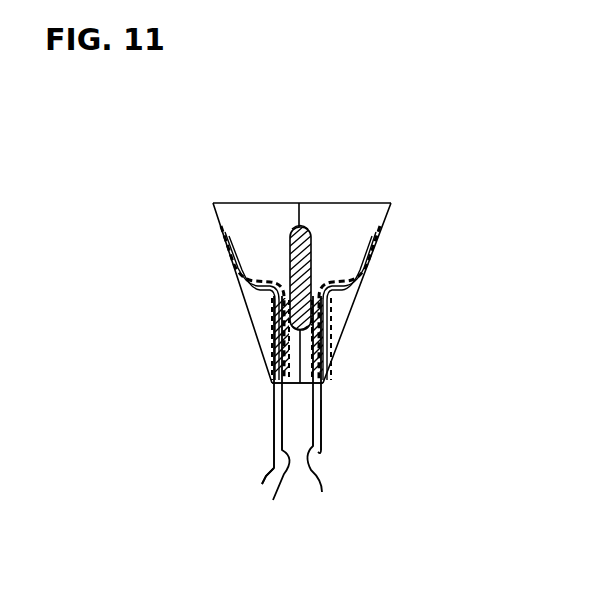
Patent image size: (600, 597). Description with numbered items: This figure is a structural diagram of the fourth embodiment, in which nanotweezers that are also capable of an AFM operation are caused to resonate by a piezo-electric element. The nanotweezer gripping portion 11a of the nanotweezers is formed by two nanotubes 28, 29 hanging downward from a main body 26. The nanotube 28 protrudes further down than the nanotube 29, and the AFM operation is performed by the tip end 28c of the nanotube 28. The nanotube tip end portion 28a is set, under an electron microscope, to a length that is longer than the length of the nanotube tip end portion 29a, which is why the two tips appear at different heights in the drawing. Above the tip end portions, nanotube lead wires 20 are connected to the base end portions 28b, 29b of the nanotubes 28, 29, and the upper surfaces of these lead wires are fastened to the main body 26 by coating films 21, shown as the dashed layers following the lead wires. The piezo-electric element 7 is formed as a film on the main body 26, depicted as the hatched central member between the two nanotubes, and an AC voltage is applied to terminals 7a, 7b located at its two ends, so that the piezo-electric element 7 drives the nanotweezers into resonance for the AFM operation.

The piezo-electric element 7 is at (317, 252).
The terminal 7a is at (292, 222).
The terminal 7b is at (288, 326).
The nanotweezer gripping portion 11a is at (232, 462).
The nanotube lead wire 20 is at (241, 288).
The coating film 21 is at (222, 249).
The main body 26 is at (325, 216).
The nanotube 28 is at (240, 417).
The nanotube tip end portion 28a is at (258, 398).
The base end portion 28b is at (258, 346).
The tip end 28c is at (262, 484).
The nanotube 29 is at (359, 412).
The nanotube tip end portion 29a is at (346, 396).
The base end portion 29b is at (346, 344).